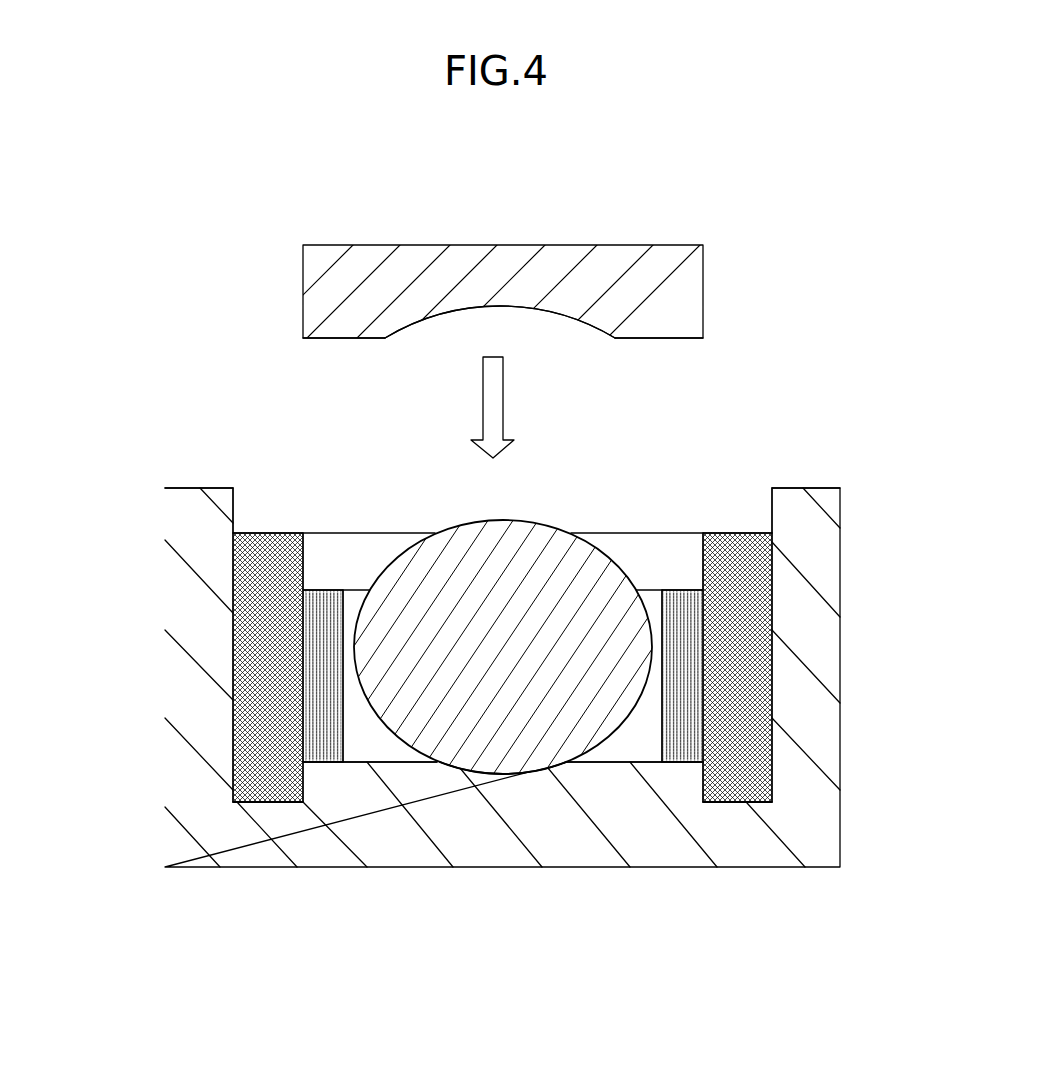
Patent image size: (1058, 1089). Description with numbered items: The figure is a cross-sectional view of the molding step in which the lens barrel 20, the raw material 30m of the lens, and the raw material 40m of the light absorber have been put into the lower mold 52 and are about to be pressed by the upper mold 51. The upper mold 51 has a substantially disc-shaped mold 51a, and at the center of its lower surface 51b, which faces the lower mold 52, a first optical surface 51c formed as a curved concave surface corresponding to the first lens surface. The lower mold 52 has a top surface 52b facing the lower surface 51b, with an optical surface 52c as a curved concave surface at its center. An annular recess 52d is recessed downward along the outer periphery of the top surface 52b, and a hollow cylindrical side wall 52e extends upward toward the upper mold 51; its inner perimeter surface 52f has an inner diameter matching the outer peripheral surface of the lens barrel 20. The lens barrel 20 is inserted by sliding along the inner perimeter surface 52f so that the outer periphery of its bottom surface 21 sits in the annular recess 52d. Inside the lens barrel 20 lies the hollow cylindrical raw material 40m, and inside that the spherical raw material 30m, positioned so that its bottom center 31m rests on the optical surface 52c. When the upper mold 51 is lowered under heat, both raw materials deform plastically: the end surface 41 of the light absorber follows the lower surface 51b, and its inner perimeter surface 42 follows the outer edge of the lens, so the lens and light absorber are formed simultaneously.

The upper mold 51 is at (550, 289).
The mold 51a is at (557, 262).
The lower surface 51b is at (350, 340).
The first optical surface 51c is at (523, 310).
The lower mold 52 is at (500, 738).
The top surface 52b is at (395, 748).
The optical surface 52c is at (543, 748).
The annular recess 52d is at (283, 803).
The side wall 52e is at (193, 598).
The inner perimeter surface 52f is at (230, 508).
The lens barrel 20 is at (502, 700).
The bottom surface 21 is at (279, 778).
The raw material of the light absorber 40m is at (320, 607).
The end surface 41 is at (496, 615).
The inner perimeter surface 42 is at (347, 722).
The raw material of the lens 30m is at (503, 708).
The bottom center 31m is at (497, 748).